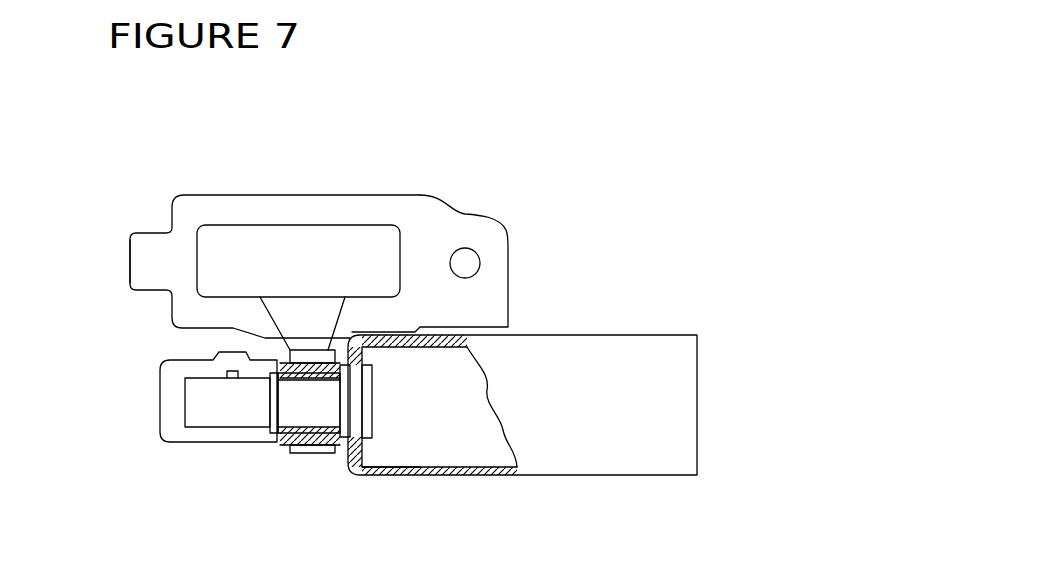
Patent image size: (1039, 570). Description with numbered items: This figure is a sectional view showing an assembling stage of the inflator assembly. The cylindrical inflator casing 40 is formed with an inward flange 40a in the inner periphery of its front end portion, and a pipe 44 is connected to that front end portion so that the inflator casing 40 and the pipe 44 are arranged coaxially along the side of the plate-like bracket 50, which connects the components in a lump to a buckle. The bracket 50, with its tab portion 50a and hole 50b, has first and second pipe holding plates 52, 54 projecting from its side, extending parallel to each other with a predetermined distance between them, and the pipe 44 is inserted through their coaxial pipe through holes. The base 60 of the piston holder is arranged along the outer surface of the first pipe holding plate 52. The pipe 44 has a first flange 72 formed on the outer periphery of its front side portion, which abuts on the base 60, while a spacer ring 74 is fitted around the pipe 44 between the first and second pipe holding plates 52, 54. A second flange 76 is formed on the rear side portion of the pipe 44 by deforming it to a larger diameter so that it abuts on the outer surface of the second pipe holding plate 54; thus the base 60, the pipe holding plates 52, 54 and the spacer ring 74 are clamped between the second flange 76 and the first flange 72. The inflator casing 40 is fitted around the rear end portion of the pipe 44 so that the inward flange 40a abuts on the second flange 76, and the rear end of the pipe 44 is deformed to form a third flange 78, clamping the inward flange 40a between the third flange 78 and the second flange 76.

The inflator casing 40 is at (530, 395).
The inward flange 40a is at (370, 452).
The pipe 44 is at (204, 443).
The bracket 50 is at (317, 216).
The plate tab 50a is at (130, 258).
The plate hole 50b is at (470, 248).
The first pipe holding plate 52 is at (260, 297).
The second pipe holding plate 54 is at (345, 297).
The base 60 is at (353, 460).
The first flange 72 is at (247, 417).
The spacer ring 74 is at (300, 455).
The second flange 76 is at (344, 446).
The third flange 78 is at (384, 430).